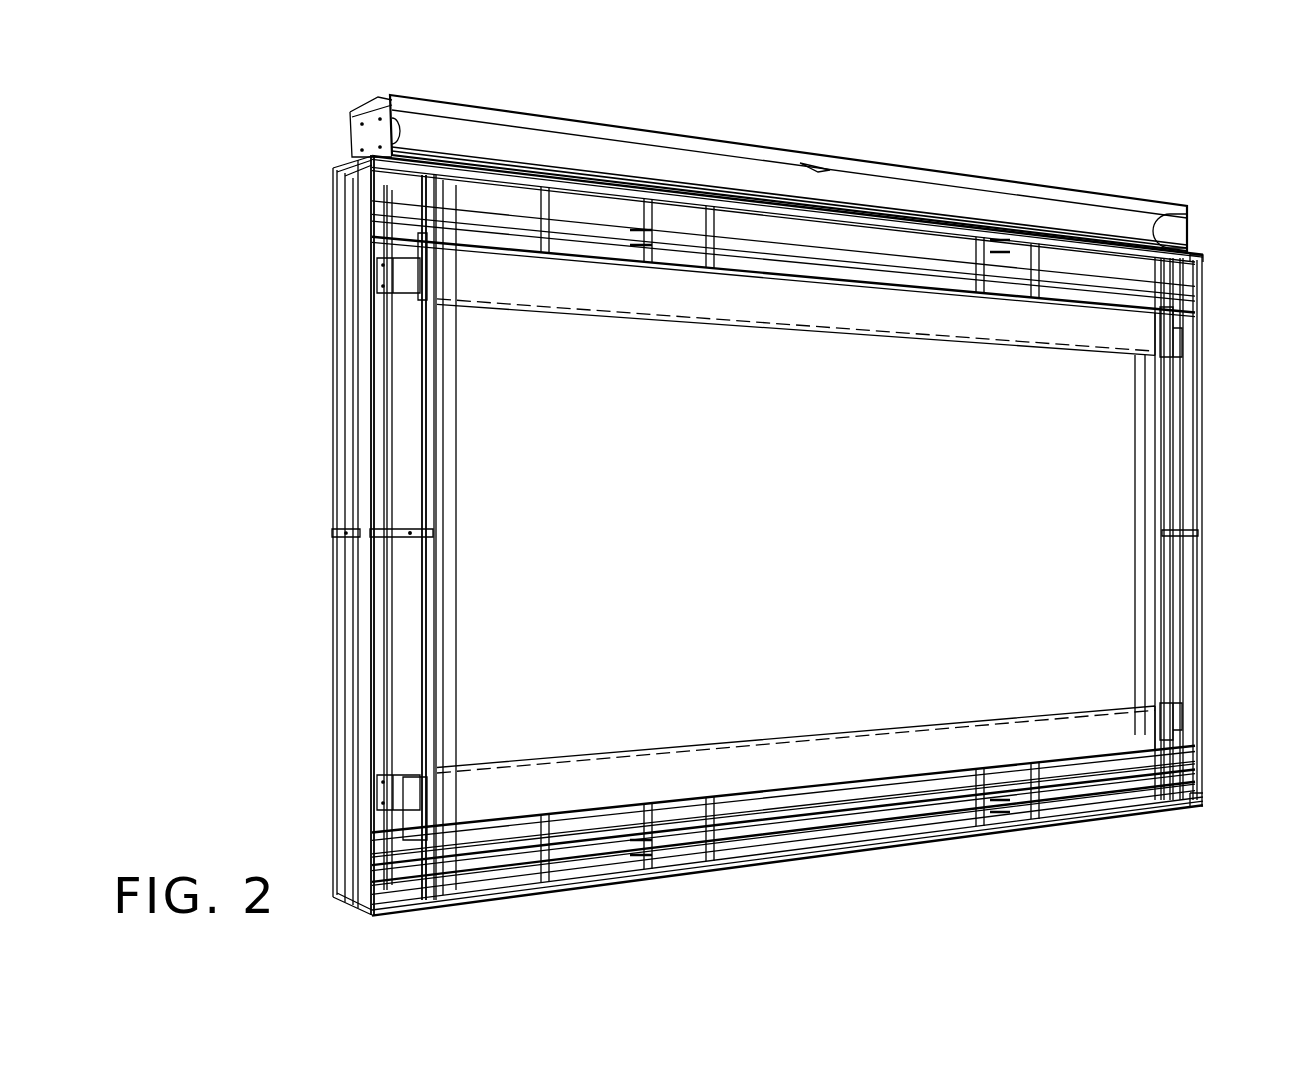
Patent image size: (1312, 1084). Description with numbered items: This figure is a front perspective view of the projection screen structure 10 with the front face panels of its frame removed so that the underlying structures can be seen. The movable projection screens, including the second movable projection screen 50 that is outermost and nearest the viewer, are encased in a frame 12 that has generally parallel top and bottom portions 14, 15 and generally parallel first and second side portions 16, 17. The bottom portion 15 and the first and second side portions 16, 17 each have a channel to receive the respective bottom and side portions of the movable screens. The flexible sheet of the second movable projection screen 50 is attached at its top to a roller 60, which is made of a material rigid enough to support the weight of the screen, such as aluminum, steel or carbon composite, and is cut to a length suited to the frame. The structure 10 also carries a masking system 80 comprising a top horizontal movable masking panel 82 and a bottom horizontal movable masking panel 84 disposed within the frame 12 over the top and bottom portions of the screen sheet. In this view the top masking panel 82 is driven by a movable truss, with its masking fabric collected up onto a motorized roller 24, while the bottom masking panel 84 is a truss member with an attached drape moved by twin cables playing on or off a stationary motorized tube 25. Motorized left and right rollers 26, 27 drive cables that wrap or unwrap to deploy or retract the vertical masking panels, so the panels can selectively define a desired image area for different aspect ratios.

The projection screen structure 10 is at (1140, 101).
The frame 12 is at (1165, 193).
The top portion 14 is at (737, 143).
The bottom portion 15 is at (842, 848).
The first side portion 16 is at (330, 665).
The second side portion 17 is at (1205, 600).
The motorized roller 24 is at (398, 186).
The stationary motorized tube 25 is at (467, 873).
The left roller 26 is at (350, 345).
The right roller 27 is at (1178, 400).
The second movable projection screen 50 is at (1026, 652).
The roller 60 is at (468, 138).
The masking system 80 is at (862, 371).
The top horizontal movable masking panel 82 is at (680, 303).
The bottom horizontal movable masking panel 84 is at (660, 775).